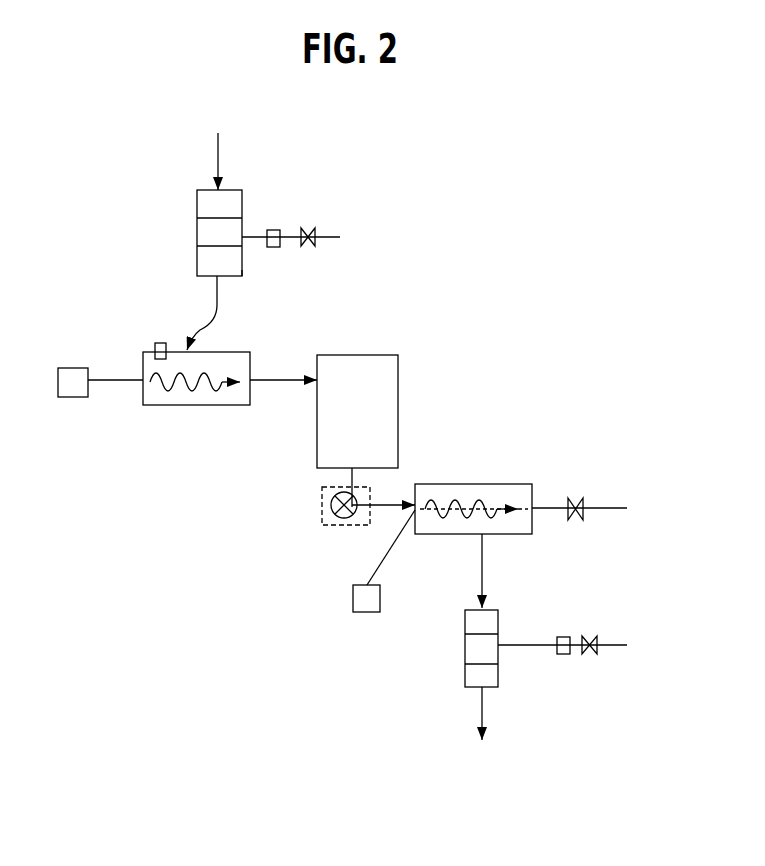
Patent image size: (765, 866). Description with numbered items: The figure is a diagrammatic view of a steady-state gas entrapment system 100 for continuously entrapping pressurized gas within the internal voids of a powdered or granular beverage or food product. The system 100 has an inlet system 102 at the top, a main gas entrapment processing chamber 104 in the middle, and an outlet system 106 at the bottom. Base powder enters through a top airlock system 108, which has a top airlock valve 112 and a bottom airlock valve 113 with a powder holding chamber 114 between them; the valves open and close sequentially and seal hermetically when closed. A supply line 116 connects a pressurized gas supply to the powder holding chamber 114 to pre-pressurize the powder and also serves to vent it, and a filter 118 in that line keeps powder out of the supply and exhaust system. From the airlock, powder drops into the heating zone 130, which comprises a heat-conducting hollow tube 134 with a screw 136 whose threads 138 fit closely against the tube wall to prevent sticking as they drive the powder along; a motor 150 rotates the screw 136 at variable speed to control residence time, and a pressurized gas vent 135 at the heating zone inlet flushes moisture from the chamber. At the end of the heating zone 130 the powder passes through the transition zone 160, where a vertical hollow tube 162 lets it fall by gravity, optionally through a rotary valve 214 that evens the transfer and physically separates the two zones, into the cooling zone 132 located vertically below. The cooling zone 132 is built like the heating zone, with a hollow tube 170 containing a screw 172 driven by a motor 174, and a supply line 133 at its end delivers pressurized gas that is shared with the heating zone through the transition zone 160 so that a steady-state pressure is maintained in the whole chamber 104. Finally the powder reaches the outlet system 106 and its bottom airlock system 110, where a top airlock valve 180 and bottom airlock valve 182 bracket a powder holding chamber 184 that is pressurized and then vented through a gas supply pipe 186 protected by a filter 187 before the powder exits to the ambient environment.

The gas entrapment system 100 is at (590, 215).
The inlet system 102 is at (390, 195).
The main gas entrapment processing chamber 104 is at (243, 498).
The outlet system 106 is at (510, 658).
The top airlock system 108 is at (187, 232).
The bottom airlock system 110 is at (450, 685).
The top airlock valve 112 is at (232, 207).
The bottom airlock valve 113 is at (235, 268).
The powder holding chamber 114 is at (203, 238).
The supply line 116 is at (325, 240).
The filter 118 is at (280, 230).
The heating zone 130 is at (158, 390).
The cooling zone 132 is at (472, 496).
The supply line 133 is at (602, 508).
The hollow tube 134 is at (203, 405).
The pressurized gas vent 135 is at (153, 347).
The screw 136 is at (207, 378).
The threads 138 is at (218, 393).
The motor 150 is at (83, 380).
The transition zone 160 is at (350, 377).
The hollow tube 162 is at (398, 388).
The hollow tube 170 is at (440, 483).
The screw 172 is at (443, 534).
The motor 174 is at (363, 603).
The top airlock valve 180 is at (488, 620).
The bottom airlock valve 182 is at (492, 673).
The powder holding chamber 184 is at (482, 648).
The gas supply pipe 186 is at (613, 645).
The filter 187 is at (565, 656).
The rotary valve 214 is at (325, 523).